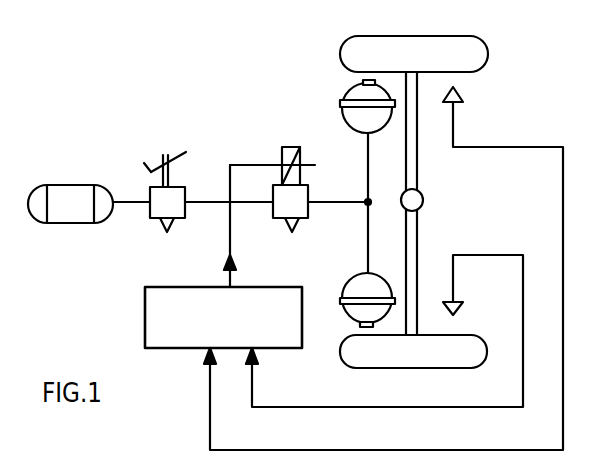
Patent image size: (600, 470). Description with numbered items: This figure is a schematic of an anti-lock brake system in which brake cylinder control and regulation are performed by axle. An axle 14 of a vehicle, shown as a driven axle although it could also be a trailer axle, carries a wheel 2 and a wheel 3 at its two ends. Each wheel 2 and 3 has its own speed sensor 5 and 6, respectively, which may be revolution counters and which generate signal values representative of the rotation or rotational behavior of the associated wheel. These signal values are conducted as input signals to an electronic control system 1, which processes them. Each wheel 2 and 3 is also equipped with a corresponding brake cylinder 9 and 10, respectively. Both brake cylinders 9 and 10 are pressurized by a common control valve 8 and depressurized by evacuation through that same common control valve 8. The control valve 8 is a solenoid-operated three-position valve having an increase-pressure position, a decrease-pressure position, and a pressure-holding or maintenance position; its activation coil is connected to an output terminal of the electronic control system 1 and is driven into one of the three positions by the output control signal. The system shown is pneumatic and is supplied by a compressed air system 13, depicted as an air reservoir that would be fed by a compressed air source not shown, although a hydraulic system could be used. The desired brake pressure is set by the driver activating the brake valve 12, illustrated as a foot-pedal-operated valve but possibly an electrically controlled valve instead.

The electronic control system 1 is at (210, 287).
The wheel 2 is at (428, 36).
The wheel 3 is at (425, 368).
The speed sensor 5 is at (463, 95).
The speed sensor 6 is at (461, 308).
The control valve 8 is at (308, 218).
The brake cylinder 9 is at (349, 93).
The brake cylinder 10 is at (346, 307).
The brake valve 12 is at (150, 218).
The compressed air system 13 is at (82, 185).
The axle 14 is at (423, 200).